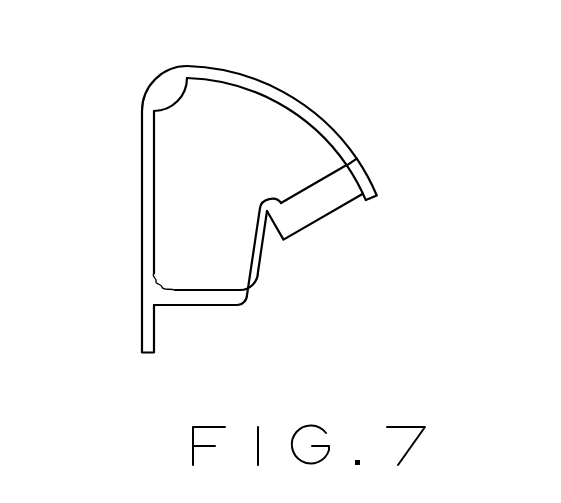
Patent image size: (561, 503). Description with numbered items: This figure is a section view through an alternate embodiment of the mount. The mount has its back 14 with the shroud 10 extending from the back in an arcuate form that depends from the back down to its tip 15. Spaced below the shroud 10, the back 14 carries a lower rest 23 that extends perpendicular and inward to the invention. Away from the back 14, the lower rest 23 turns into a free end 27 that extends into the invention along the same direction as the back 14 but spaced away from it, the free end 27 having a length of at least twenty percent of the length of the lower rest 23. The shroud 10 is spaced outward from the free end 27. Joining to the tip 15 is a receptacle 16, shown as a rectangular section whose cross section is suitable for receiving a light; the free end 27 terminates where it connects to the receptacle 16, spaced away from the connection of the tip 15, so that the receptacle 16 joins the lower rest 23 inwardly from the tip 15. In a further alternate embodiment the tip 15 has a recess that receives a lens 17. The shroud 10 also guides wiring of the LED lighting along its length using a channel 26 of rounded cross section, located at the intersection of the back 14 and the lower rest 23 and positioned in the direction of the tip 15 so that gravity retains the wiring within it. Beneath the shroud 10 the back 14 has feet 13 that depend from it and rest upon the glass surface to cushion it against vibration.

The shroud 10 is at (257, 204).
The feet 13 is at (142, 326).
The back 14 is at (141, 217).
The tip 15 is at (345, 138).
The receptacle 16 is at (328, 221).
The lens 17 is at (377, 196).
The lower rest 23 is at (261, 275).
The channel 26 is at (155, 288).
The free end 27 is at (262, 252).